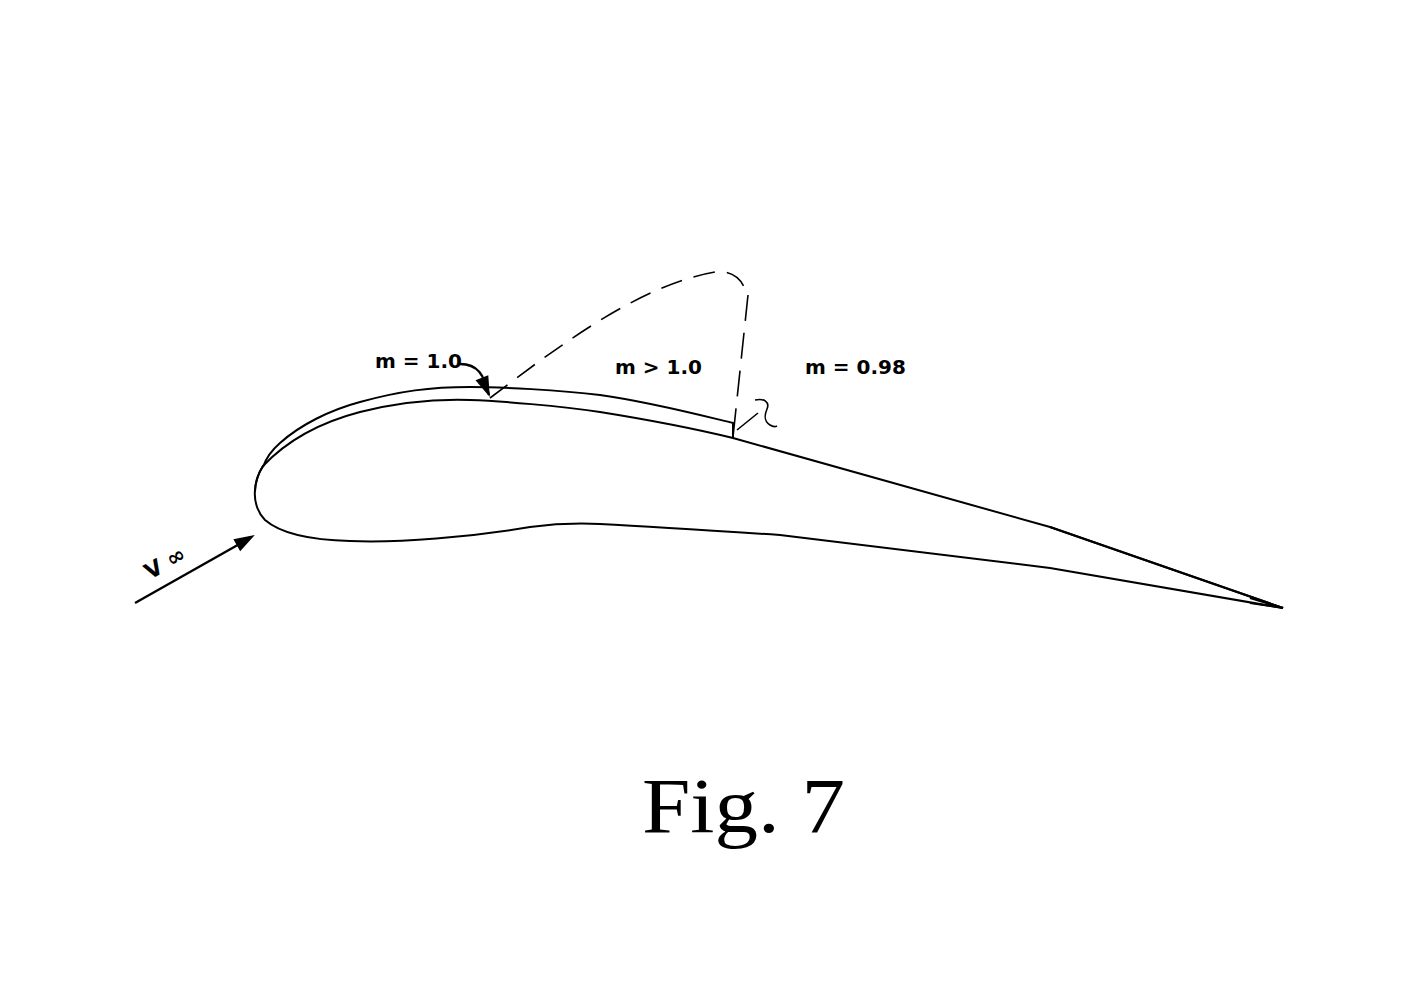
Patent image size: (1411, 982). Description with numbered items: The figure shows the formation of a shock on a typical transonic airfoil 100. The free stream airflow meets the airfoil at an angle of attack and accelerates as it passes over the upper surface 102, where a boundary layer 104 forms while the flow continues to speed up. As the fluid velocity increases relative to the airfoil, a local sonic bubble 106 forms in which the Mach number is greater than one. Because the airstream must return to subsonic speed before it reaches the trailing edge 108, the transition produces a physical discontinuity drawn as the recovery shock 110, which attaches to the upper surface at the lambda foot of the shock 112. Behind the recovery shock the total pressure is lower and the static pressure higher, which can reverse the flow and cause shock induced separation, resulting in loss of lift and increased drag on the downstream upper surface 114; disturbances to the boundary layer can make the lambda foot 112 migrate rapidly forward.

The transonic airfoil 100 is at (752, 125).
The upper surface 102 is at (245, 476).
The boundary layer 104 is at (336, 390).
The local sonic bubble 106 is at (541, 345).
The trailing edge 108 is at (1296, 596).
The recovery shock 110 is at (765, 303).
The lambda foot of the shock 112 is at (790, 434).
The upper surface downstream of the recovery shock 114 is at (1158, 554).